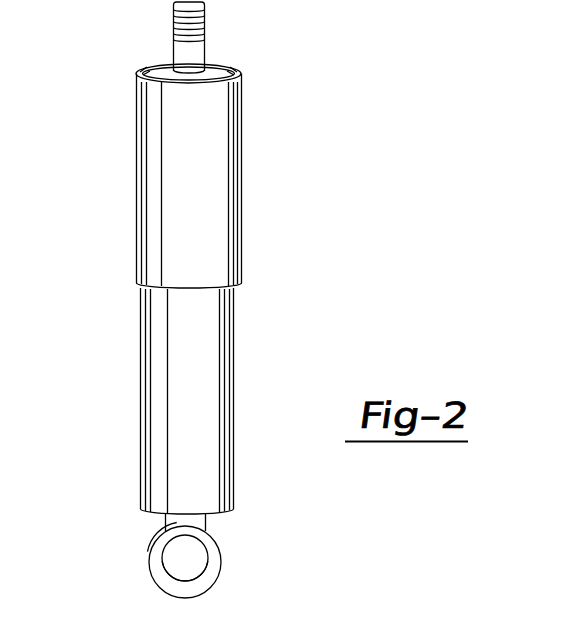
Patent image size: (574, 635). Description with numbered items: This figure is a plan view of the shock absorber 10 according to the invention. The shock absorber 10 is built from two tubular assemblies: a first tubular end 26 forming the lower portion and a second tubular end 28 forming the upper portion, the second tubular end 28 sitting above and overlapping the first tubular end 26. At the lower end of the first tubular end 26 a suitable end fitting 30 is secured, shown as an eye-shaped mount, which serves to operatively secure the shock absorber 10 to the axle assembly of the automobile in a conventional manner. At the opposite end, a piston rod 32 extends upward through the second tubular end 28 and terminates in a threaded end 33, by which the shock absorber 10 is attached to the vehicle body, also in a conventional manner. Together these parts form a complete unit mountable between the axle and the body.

The shock absorber 10 is at (84, 305).
The first tubular end 26 is at (210, 335).
The second tubular end 28 is at (232, 162).
The end fitting 30 is at (158, 558).
The piston rod 32 is at (185, 61).
The threaded end 33 is at (205, 32).